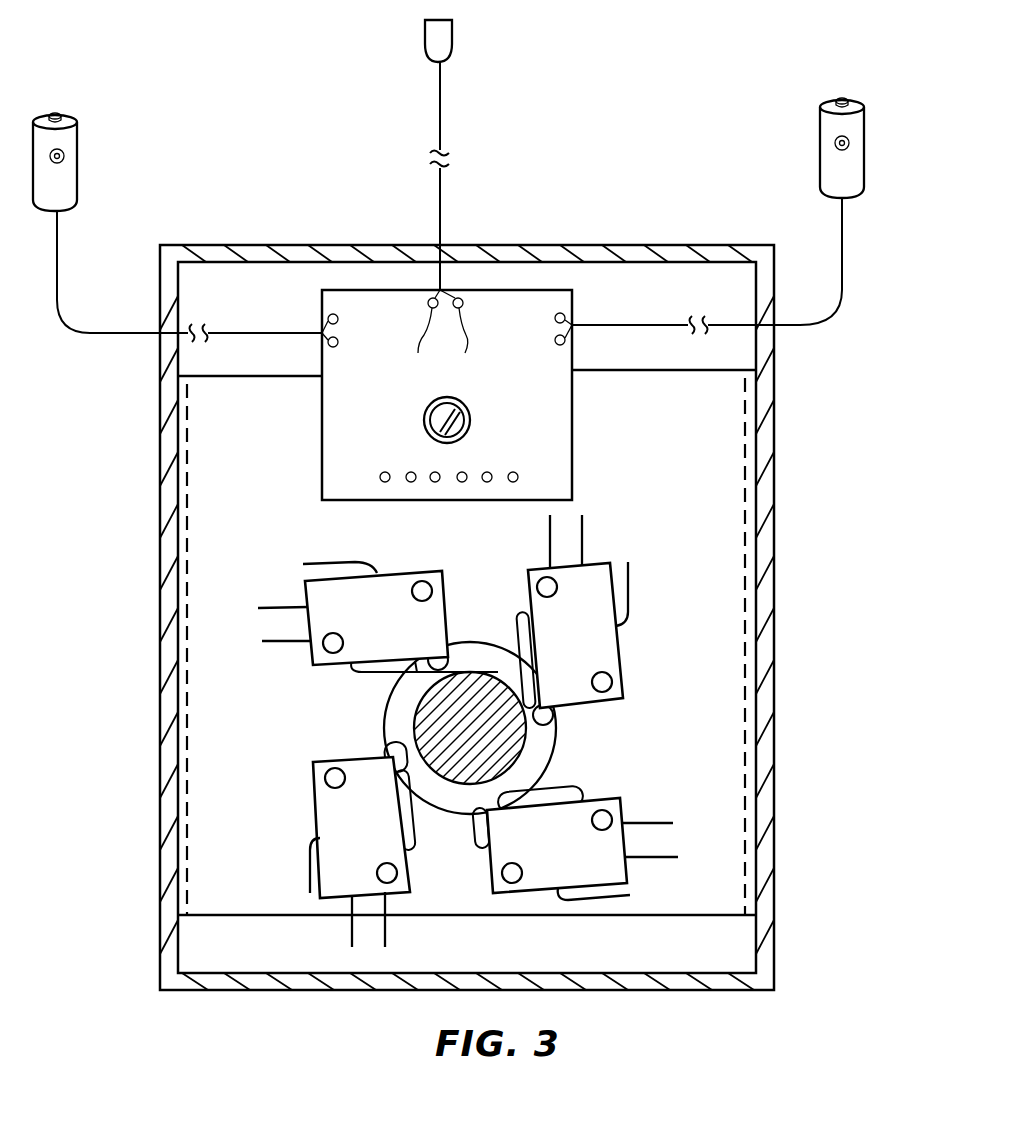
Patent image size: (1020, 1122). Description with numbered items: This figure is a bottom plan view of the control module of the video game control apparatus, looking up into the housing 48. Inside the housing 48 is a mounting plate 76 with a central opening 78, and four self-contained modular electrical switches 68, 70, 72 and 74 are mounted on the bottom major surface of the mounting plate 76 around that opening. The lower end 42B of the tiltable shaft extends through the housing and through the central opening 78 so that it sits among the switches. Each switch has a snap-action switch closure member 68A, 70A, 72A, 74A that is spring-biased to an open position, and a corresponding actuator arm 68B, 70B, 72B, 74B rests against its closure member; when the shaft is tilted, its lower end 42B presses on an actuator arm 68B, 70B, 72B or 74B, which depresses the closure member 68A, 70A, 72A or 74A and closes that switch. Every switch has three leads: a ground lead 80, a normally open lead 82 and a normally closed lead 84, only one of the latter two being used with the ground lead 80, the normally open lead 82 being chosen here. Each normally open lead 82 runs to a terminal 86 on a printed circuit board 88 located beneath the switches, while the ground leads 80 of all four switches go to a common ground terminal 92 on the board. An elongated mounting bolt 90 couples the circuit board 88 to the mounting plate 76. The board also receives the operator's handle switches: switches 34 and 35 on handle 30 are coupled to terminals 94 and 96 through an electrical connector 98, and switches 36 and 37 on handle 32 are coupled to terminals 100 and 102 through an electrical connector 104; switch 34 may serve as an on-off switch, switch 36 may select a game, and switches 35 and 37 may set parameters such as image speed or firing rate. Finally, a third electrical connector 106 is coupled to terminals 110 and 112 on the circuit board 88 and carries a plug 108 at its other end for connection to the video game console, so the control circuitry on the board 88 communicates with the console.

The handle 30 is at (70, 186).
The handle 32 is at (825, 175).
The manually-operable switch 34 is at (55, 114).
The manually-operable switch 35 is at (64, 156).
The manually-operable switch 36 is at (842, 99).
The manually-operable switch 37 is at (835, 143).
The lower end of shaft 42B is at (490, 742).
The housing 48 is at (774, 580).
The electrical switch 68 is at (390, 592).
The switch closure member 68A is at (455, 652).
The actuator arm 68B is at (360, 667).
The electrical switch 70 is at (607, 652).
The switch closure member 70A is at (553, 722).
The actuator arm 70B is at (522, 615).
The electrical switch 72 is at (612, 872).
The switch closure member 72A is at (477, 848).
The actuator arm 72B is at (560, 790).
The electrical switch 74 is at (328, 805).
The switch closure member 74A is at (388, 748).
The actuator arm 74B is at (408, 845).
The mounting plate 76 is at (680, 472).
The central opening 78 is at (392, 722).
The ground lead 80 is at (335, 563).
The normally open lead 82 is at (280, 641).
The normally closed lead 84 is at (278, 607).
The terminal 86 is at (438, 472).
The printed circuit board 88 is at (565, 400).
The mounting bolt 90 is at (465, 416).
The common ground terminal 92 is at (409, 472).
The terminal 94 is at (339, 319).
The terminal 96 is at (339, 342).
The electrical connector 98 is at (103, 333).
The terminal 100 is at (554, 318).
The terminal 102 is at (554, 340).
The electrical connector 104 is at (795, 325).
The electrical connector 106 is at (440, 115).
The plug 108 is at (453, 46).
The terminal 110 is at (425, 333).
The terminal 112 is at (465, 333).